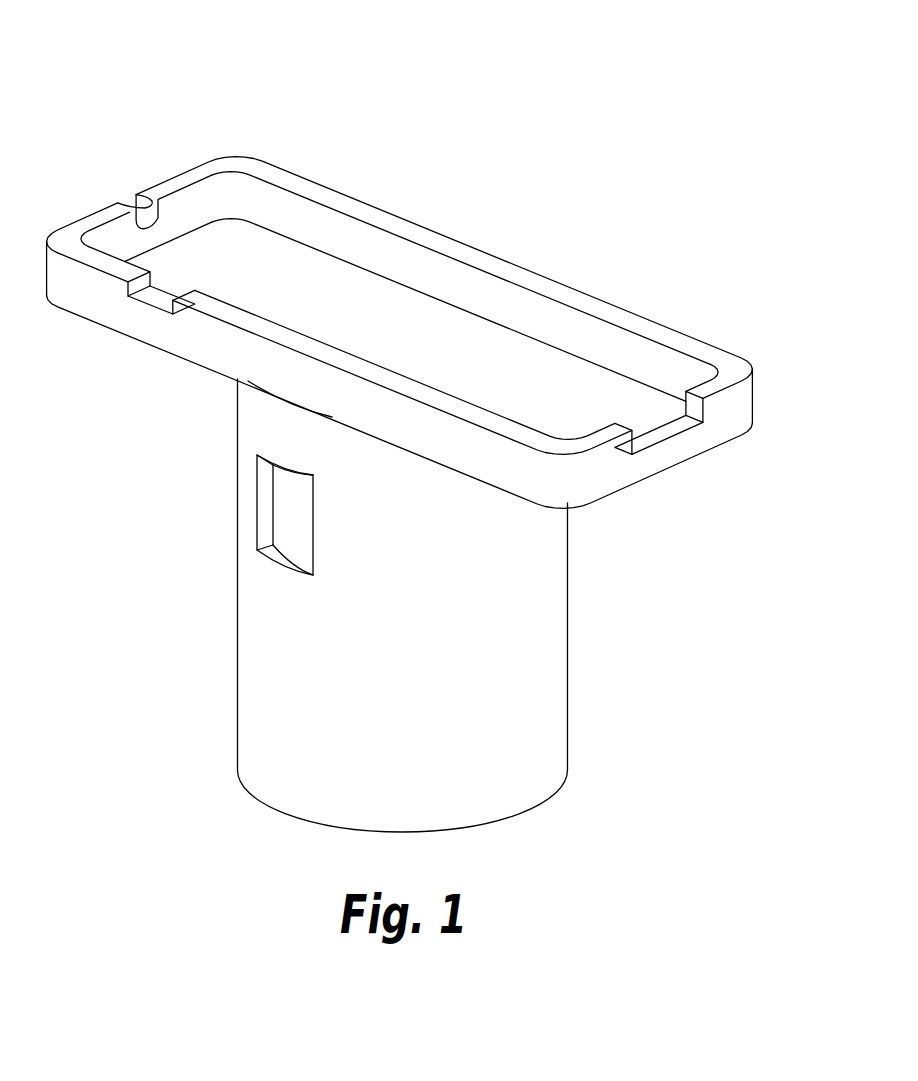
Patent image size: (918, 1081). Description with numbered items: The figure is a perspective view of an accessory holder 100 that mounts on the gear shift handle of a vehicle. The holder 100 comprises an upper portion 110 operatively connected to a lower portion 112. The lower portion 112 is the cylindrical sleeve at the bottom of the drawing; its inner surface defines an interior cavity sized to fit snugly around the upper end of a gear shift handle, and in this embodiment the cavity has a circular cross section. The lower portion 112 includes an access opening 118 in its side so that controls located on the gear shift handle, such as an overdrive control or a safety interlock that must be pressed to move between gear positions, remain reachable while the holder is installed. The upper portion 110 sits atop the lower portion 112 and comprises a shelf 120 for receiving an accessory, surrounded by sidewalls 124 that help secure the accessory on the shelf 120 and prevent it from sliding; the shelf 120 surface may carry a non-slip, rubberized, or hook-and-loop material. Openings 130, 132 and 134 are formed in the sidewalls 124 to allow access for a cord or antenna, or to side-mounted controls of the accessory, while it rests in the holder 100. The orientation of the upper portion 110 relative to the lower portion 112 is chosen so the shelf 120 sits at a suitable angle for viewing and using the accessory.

The accessory holder 100 is at (506, 108).
The upper portion 110 is at (497, 253).
The lower portion 112 is at (268, 680).
The opening 118 is at (284, 513).
The shelf 120 is at (605, 393).
The sidewalls 124 is at (302, 217).
The opening 130 is at (657, 425).
The opening 132 is at (150, 293).
The opening 134 is at (125, 215).